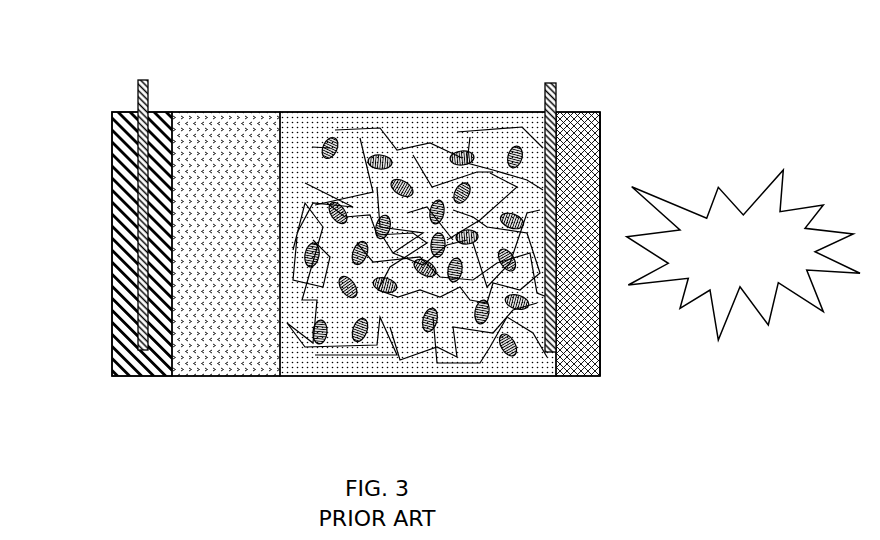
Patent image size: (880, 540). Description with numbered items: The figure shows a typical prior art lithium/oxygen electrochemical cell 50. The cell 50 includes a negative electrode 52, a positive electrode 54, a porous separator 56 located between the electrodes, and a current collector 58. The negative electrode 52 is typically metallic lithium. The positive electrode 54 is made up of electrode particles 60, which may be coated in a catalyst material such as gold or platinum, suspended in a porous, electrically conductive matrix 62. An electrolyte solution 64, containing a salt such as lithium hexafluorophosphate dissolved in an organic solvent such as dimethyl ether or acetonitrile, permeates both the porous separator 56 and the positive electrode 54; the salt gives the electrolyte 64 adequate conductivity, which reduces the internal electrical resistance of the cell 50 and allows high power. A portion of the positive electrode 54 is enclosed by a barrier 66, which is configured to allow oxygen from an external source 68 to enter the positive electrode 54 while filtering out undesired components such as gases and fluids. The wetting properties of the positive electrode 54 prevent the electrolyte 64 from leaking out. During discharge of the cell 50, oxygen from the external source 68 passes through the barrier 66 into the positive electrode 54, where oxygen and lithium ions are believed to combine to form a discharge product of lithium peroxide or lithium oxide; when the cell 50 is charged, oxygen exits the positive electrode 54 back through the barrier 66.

The lithium/oxygen electrochemical cell 50 is at (146, 56).
The negative electrode 52 is at (112, 202).
The positive electrode 54 is at (505, 376).
The porous separator 56 is at (210, 376).
The current collector 58 is at (556, 100).
The electrode particles 60 is at (330, 147).
The porous, electrically conductive matrix 62 is at (420, 153).
The electrolyte solution 64 is at (418, 246).
The barrier 66 is at (600, 126).
The external source 68 is at (783, 187).